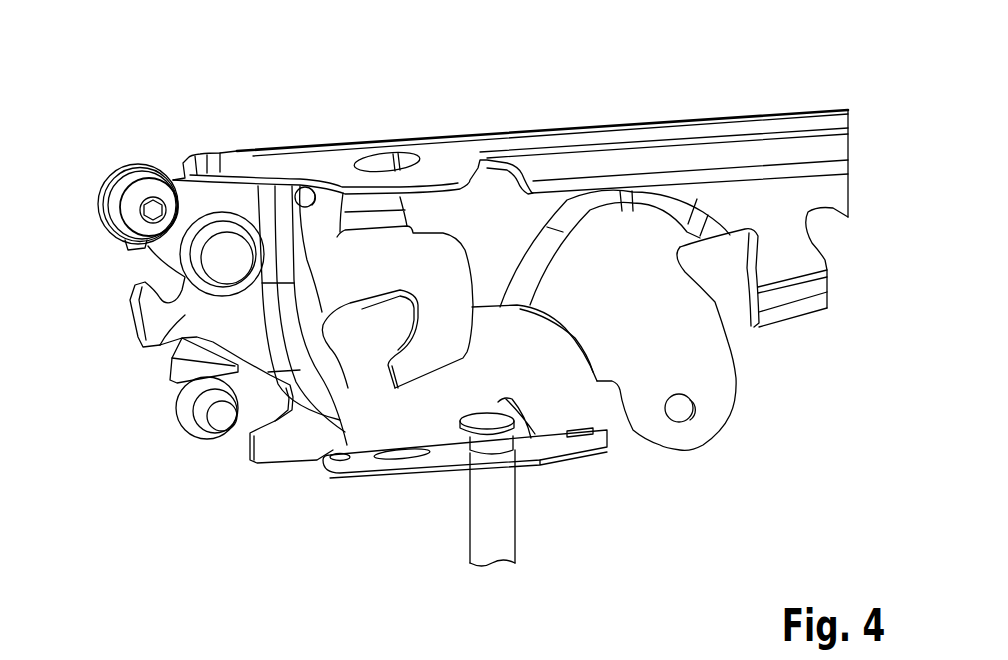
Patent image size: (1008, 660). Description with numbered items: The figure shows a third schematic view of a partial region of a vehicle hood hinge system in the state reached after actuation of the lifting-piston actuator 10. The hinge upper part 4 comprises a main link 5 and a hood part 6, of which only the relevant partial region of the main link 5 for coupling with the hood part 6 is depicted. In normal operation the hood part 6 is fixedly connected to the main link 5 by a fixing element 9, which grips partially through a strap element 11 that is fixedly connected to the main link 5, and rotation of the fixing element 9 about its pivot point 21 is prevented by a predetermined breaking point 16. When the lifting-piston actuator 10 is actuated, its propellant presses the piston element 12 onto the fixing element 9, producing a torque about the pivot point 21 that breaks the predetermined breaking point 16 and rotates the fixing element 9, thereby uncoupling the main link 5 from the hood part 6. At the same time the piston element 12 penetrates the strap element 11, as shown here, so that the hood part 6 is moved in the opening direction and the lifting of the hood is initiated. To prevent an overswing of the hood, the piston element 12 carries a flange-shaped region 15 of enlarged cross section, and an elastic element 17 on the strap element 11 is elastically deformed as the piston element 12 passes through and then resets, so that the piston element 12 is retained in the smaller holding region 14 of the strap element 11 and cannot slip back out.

The hinge upper part 4 is at (103, 152).
The main link 5 is at (200, 412).
The hood part 6 is at (633, 166).
The fixing element 9 is at (147, 349).
The lifting-piston actuator 10 is at (465, 475).
The strap element 11 is at (343, 522).
The piston element 12 is at (567, 545).
The holding region 14 is at (400, 517).
The flange-shaped region 15 is at (490, 420).
The predetermined breaking point 16 is at (255, 324).
The elastic element 17 is at (577, 485).
The pivot point 21 is at (228, 258).